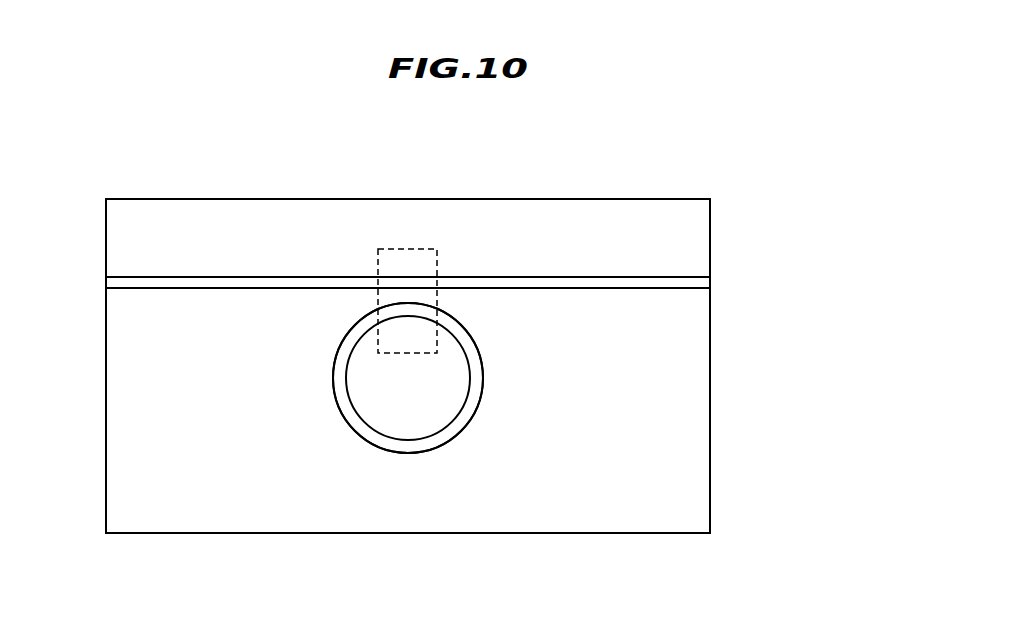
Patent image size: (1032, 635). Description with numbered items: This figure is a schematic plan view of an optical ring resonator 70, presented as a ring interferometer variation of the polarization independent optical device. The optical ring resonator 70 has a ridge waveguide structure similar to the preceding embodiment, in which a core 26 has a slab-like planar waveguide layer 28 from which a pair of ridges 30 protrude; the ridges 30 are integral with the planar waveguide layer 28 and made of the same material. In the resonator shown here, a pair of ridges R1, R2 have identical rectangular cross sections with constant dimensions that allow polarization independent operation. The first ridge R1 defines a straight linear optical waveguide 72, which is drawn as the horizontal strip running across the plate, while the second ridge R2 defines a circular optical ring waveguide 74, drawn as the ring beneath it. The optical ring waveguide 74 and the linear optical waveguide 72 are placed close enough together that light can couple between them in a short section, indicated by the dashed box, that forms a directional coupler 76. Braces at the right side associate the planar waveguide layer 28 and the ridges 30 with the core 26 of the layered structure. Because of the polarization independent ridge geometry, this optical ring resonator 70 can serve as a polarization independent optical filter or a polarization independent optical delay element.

The optical ring resonator 70 is at (659, 165).
The core 26 is at (829, 223).
The planar waveguide layer 28 is at (699, 236).
The ridges 30 is at (774, 265).
The linear optical waveguide 72 is at (173, 283).
The optical ring waveguide 74 is at (409, 448).
The directional coupler 76 is at (408, 249).
The first ridge R1 is at (705, 283).
The second ridge R2 is at (479, 383).